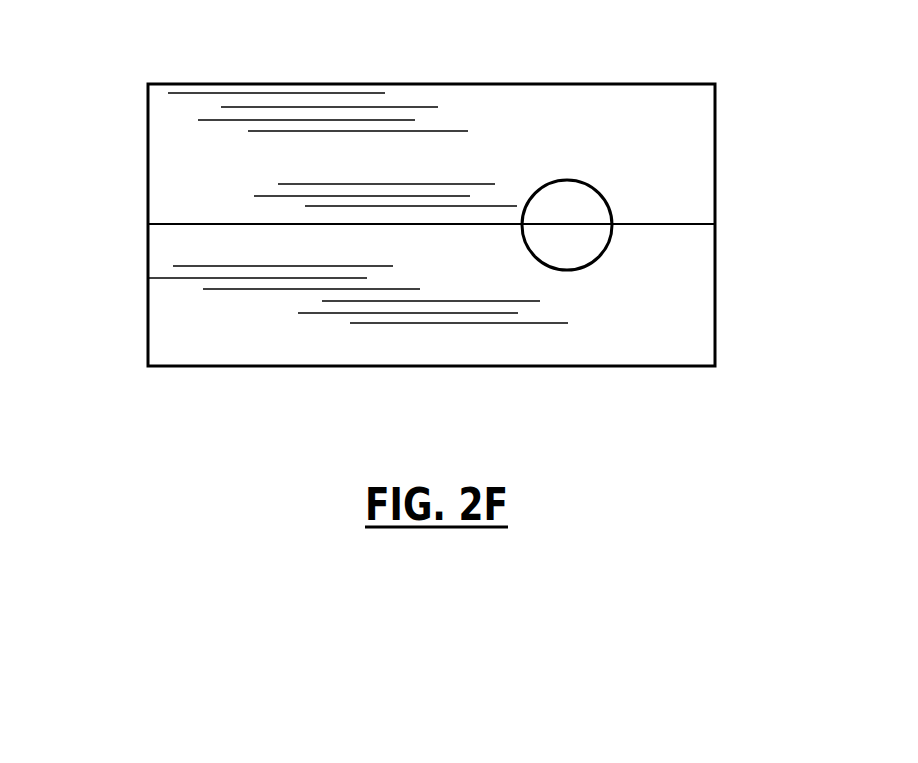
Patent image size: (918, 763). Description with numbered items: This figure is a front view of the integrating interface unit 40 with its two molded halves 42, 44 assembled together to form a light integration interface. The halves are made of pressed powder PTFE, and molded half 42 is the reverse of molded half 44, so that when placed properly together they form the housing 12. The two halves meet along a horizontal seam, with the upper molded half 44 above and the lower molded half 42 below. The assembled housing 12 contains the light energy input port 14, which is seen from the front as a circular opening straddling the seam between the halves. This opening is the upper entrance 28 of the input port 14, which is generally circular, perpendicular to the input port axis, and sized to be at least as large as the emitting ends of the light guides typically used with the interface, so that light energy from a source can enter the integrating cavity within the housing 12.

The housing 12 is at (658, 84).
The light energy input port 14 is at (607, 253).
The upper entrance 28 is at (603, 192).
The integrating interface unit 40 is at (448, 60).
The molded half 42 is at (148, 302).
The molded half 44 is at (148, 157).